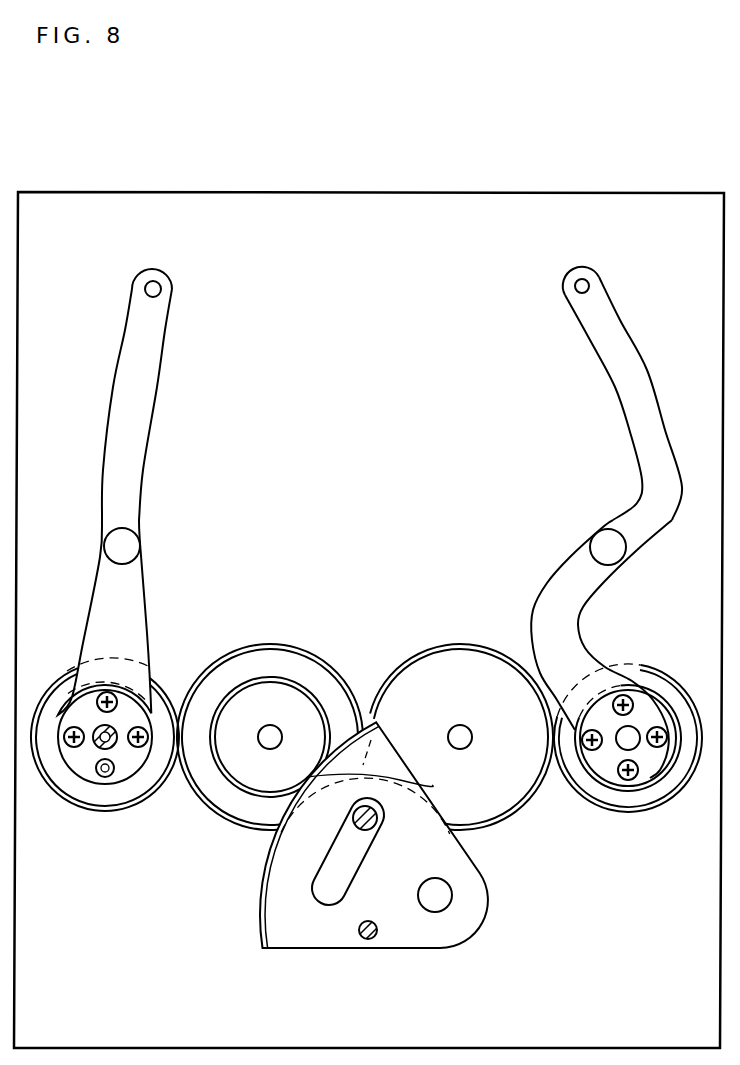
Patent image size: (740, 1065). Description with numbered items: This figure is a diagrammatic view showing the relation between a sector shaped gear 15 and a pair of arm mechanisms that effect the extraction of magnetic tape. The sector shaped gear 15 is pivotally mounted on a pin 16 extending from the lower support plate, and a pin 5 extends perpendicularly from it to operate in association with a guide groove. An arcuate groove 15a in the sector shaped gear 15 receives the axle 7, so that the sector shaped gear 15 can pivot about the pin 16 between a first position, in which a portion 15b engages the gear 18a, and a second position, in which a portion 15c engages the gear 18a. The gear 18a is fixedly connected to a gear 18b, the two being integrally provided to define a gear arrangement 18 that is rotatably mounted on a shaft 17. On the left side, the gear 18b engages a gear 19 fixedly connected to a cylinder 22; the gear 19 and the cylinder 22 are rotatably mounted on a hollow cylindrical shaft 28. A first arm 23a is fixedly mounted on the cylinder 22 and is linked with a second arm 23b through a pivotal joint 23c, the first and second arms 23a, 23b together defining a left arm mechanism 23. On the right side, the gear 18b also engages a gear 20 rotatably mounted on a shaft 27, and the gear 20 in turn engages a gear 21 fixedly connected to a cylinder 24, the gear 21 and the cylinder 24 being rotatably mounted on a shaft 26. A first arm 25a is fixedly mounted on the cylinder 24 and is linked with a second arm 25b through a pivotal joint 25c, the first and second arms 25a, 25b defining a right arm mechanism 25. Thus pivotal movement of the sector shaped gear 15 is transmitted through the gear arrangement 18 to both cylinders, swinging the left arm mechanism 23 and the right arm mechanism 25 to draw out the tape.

The pin 5 is at (367, 940).
The axle 7 is at (372, 826).
The sector shaped gear 15 is at (332, 855).
The arcuate groove 15a is at (328, 897).
The portion of the sector shaped gear 15b is at (254, 897).
The portion of the sector shaped gear 15c is at (392, 785).
The pin 16 is at (432, 902).
The shaft 17 is at (270, 728).
The gear arrangement 18 is at (276, 706).
The gear 18a is at (302, 685).
The gear 18b is at (273, 637).
The gear 19 is at (143, 797).
The gear 20 is at (461, 755).
The gear 21 is at (597, 813).
The cylinder 22 is at (100, 792).
The left arm mechanism 23 is at (117, 492).
The first arm 23a is at (100, 612).
The second arm 23b is at (120, 453).
The pivotal joint 23c is at (118, 545).
The cylinder 24 is at (662, 700).
The right arm mechanism 25 is at (613, 522).
The first arm 25a is at (602, 597).
The second arm 25b is at (645, 375).
The pivotal joint 25c is at (613, 553).
The shaft 26 is at (636, 746).
The shaft 27 is at (467, 729).
The hollow cylindrical shaft 28 is at (105, 743).